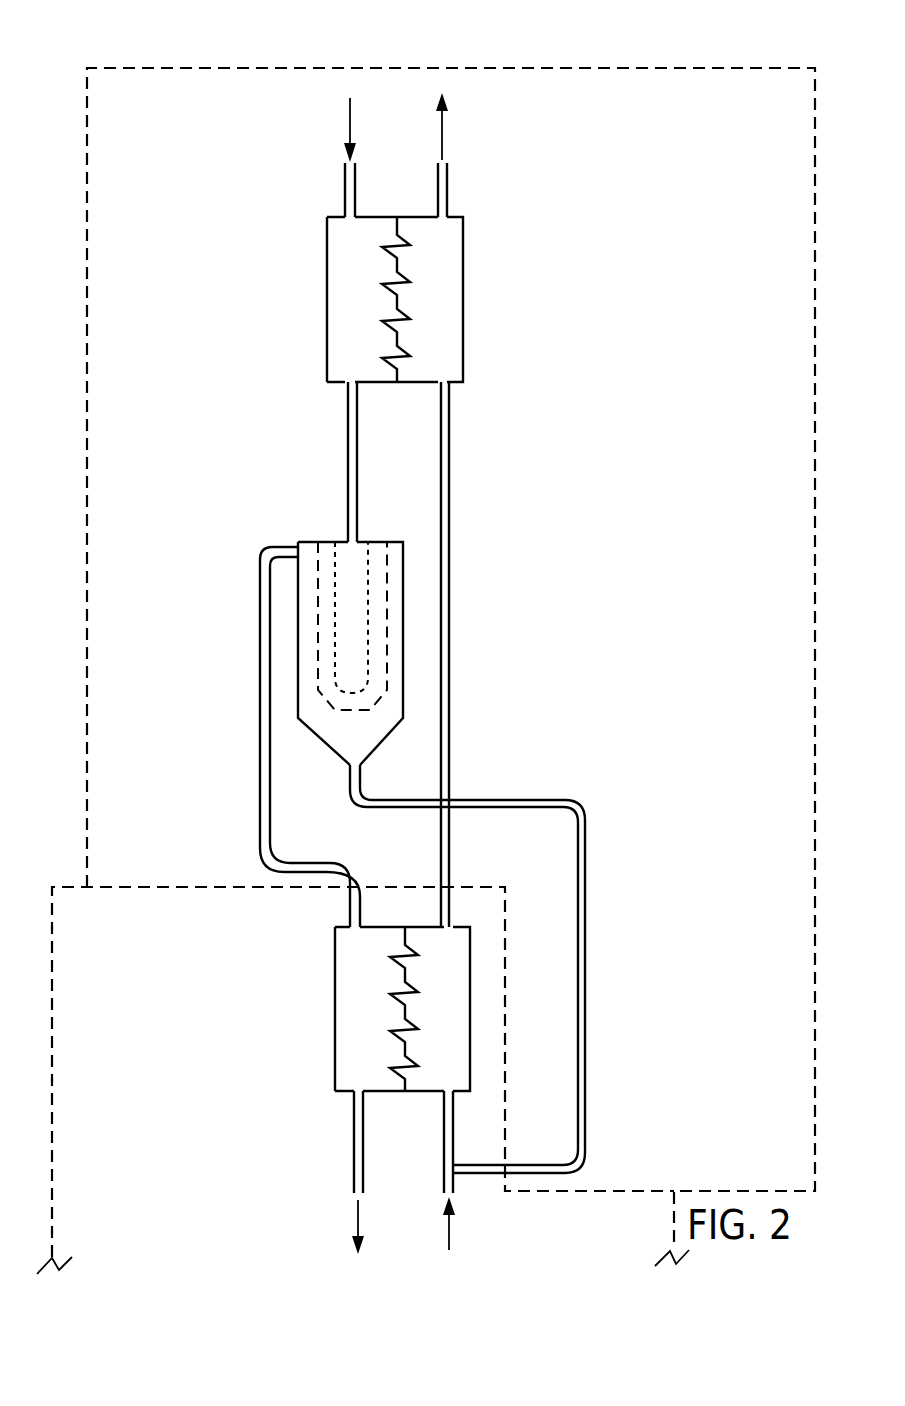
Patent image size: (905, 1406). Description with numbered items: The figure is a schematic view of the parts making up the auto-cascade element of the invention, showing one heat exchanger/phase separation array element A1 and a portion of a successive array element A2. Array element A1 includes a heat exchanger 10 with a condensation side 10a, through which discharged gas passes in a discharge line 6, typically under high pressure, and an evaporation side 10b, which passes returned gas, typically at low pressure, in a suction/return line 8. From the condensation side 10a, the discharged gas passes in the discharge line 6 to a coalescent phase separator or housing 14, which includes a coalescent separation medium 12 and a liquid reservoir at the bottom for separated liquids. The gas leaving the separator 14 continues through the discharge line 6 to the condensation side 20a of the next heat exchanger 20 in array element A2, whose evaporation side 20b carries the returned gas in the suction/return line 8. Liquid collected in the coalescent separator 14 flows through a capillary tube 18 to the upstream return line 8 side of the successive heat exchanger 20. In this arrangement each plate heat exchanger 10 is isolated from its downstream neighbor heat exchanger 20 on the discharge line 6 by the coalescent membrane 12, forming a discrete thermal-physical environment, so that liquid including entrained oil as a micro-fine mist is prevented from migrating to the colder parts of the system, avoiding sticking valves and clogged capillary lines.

The discharge line 6 is at (345, 202).
The suction/return line 8 is at (448, 205).
The heat exchanger 10 is at (412, 291).
The condensation side 10a is at (336, 229).
The evaporation side 10b is at (438, 285).
The coalescent separation medium 12 is at (380, 630).
The coalescent phase separator 14 is at (298, 541).
The capillary tube 18 is at (585, 827).
The heat exchanger 20 is at (428, 994).
The condensation side 20a is at (358, 1042).
The evaporation side 20b is at (455, 1043).
The heat exchanger/phase separation array element A1 is at (145, 68).
The successive array element A2 is at (83, 887).